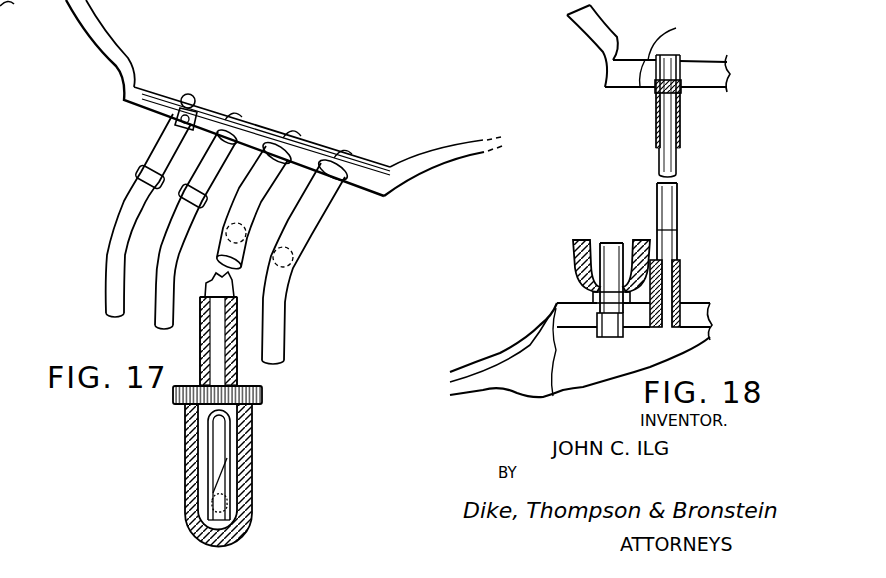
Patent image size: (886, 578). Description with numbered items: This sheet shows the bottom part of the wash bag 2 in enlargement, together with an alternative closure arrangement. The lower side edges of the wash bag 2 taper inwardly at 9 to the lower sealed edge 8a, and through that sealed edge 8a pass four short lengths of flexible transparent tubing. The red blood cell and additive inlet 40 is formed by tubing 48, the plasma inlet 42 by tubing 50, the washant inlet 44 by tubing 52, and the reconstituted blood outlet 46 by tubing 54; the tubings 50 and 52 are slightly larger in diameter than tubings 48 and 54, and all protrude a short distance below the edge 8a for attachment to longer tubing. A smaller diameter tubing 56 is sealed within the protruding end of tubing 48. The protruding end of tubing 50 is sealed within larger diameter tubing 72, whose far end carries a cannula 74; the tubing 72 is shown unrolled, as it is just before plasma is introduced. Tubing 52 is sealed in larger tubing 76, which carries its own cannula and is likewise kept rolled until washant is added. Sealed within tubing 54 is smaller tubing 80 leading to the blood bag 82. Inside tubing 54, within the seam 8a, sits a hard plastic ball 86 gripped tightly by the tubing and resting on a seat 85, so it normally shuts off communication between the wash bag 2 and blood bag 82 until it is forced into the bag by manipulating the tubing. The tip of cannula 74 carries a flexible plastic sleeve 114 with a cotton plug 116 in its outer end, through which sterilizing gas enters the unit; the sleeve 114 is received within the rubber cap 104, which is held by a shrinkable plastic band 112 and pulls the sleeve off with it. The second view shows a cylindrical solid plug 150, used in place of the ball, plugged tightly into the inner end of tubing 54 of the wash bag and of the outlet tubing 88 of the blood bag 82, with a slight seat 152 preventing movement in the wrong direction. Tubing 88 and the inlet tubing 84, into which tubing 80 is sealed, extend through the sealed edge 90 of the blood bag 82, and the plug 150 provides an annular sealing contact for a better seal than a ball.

In FIG. 17, the tapered portion of lower side edges 9 is at (100, 35).
In FIG. 17, the lower sealed edge 8a is at (143, 107).
In FIG. 18, the lower sealed edge 8a is at (642, 72).
In FIG. 17, the red blood cell and additive inlet 40 is at (233, 113).
In FIG. 17, the plasma inlet 42 is at (292, 133).
In FIG. 17, the washant inlet 44 is at (343, 155).
In FIG. 17, the reconstituted blood outlet 46 is at (197, 100).
In FIG. 17, the hard plastic ball 86 is at (199, 105).
In FIG. 17, the seat 85 is at (177, 118).
In FIG. 17, the flexible plastic tubing 80 is at (108, 248).
In FIG. 18, the flexible plastic tubing 80 is at (679, 207).
In FIG. 17, the outlet tubing 54 is at (157, 152).
In FIG. 18, the outlet tubing 54 is at (688, 135).
In FIG. 17, the flexible plastic tubing 56 is at (155, 287).
In FIG. 17, the inlet tubing 48 is at (186, 185).
In FIG. 17, the plasma inlet tubing 50 is at (236, 222).
In FIG. 17, the wash solution inlet tubing 52 is at (302, 227).
In FIG. 17, the flexible plastic tubing 76 is at (270, 323).
In FIG. 17, the flexible plastic tubing 72 is at (214, 278).
In FIG. 17, the shrinkable plastic band 112 is at (252, 422).
In FIG. 18, the shrinkable plastic band 112 is at (510, 0).
In FIG. 17, the rubber cap 104 is at (192, 468).
In FIG. 18, the rubber cap 104 is at (578, 262).
In FIG. 17, the cannula 74 is at (205, 447).
In FIG. 17, the cotton plug 116 is at (232, 506).
In FIG. 17, the flexible plastic sleeve 114 is at (205, 508).
In FIG. 18, the wash bag 2 is at (621, 35).
In FIG. 18, the cylindrical solid plug 150 is at (668, 55).
In FIG. 18, the seat 152 is at (677, 83).
In FIG. 18, the blood bag outlet tubing 88 is at (603, 243).
In FIG. 18, the sealed edge 90 is at (557, 305).
In FIG. 18, the blood bag 82 is at (527, 357).
In FIG. 18, the blood bag inlet tubing 84 is at (688, 300).